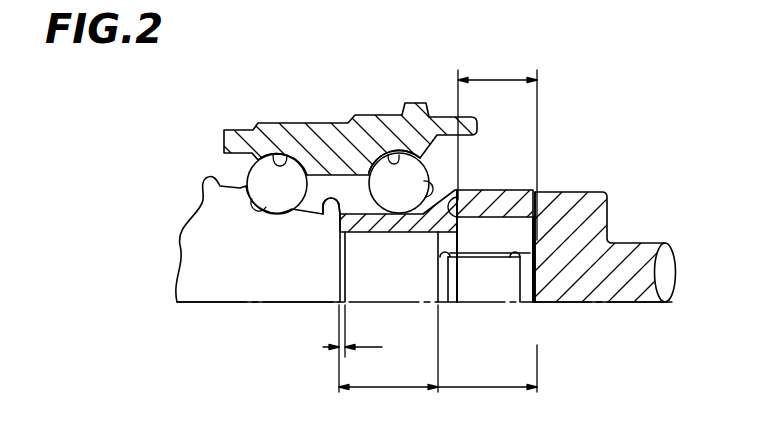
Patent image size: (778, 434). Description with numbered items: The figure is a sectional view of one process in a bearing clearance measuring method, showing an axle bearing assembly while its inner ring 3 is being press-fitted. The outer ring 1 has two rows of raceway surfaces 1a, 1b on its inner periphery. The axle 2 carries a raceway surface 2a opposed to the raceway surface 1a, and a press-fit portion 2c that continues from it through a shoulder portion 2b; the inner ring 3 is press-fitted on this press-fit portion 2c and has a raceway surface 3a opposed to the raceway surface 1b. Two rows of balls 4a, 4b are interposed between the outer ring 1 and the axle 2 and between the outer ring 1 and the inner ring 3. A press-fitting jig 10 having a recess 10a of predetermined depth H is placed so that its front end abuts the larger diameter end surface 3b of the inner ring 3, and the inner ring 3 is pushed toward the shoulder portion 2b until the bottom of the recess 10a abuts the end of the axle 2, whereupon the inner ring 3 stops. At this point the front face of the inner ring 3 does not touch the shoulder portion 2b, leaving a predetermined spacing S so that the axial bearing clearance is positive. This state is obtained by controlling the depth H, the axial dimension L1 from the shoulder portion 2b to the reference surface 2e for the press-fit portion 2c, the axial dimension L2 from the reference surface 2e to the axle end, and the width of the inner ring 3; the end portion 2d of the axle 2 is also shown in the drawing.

The outer ring 1 is at (215, 131).
The raceway surface 1a is at (278, 156).
The raceway surface 1b is at (388, 154).
The axle 2 is at (198, 222).
The raceway surface 2a is at (272, 204).
The shoulder portion 2b is at (328, 210).
The press-fit portion 2c is at (391, 222).
The inner ring end portion 2d is at (518, 300).
The reference surface 2e is at (447, 300).
The inner ring 3 is at (458, 190).
The raceway surface 3a is at (458, 188).
The larger diameter end surface 3b is at (463, 214).
The balls 4a is at (265, 170).
The balls 4b is at (410, 162).
The press-fitting jig 10 is at (604, 212).
The recess 10a is at (537, 191).
The depth H is at (497, 148).
The spacing S is at (357, 348).
The axial dimension L1 is at (388, 348).
The axial dimension L2 is at (487, 368).